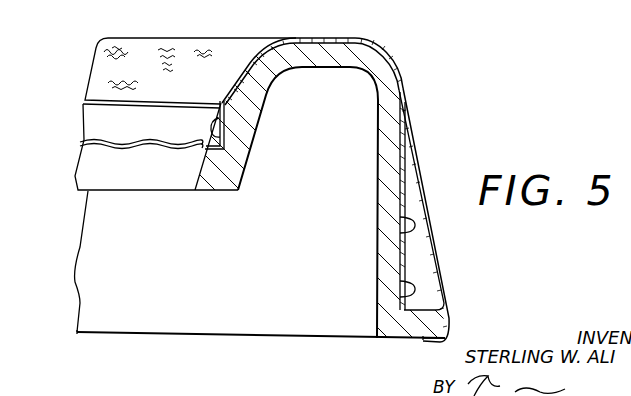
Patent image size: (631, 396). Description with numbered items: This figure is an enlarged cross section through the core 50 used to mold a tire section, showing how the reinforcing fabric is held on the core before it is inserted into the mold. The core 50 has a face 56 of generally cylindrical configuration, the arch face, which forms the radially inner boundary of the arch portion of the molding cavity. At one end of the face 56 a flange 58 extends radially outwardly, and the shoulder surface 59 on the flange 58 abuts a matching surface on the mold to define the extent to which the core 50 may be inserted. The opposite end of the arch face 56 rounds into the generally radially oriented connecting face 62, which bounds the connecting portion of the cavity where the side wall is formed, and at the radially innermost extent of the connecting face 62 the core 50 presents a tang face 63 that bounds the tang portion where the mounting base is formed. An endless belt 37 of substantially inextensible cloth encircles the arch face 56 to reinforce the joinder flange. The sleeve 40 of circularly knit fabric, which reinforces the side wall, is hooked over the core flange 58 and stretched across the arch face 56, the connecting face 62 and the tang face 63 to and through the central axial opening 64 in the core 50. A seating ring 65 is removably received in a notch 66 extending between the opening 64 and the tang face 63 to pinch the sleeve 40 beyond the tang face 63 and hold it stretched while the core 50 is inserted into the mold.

The core 50 is at (219, 353).
The endless belt 37 is at (403, 226).
The sleeve 40 is at (442, 268).
The face 56 is at (402, 290).
The flange 58 is at (417, 322).
The shoulder surface 59 is at (440, 305).
The connecting face 62 is at (322, 42).
The tang face 63 is at (241, 88).
The central axial opening 64 is at (174, 177).
The seating ring 65 is at (133, 120).
The notch 66 is at (224, 139).